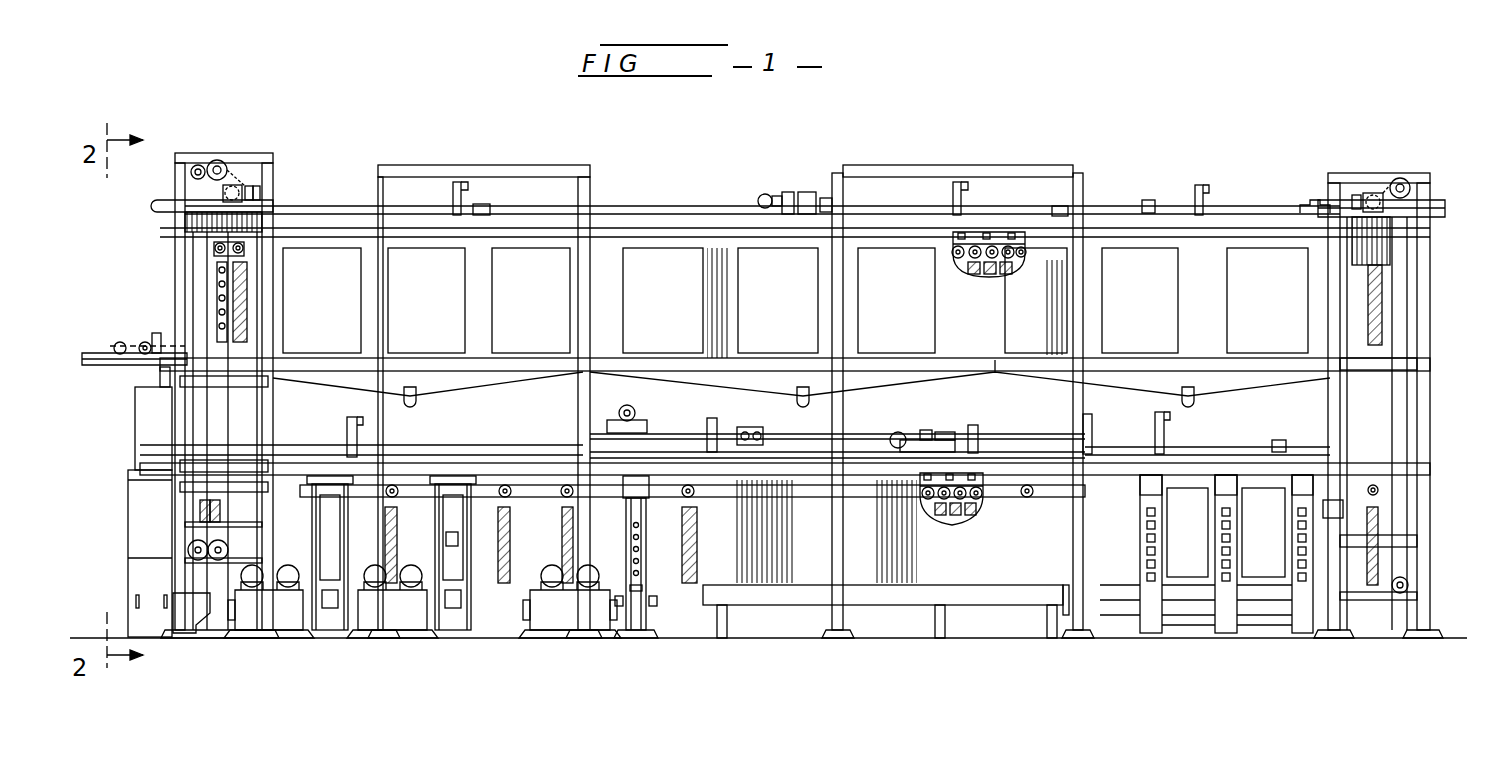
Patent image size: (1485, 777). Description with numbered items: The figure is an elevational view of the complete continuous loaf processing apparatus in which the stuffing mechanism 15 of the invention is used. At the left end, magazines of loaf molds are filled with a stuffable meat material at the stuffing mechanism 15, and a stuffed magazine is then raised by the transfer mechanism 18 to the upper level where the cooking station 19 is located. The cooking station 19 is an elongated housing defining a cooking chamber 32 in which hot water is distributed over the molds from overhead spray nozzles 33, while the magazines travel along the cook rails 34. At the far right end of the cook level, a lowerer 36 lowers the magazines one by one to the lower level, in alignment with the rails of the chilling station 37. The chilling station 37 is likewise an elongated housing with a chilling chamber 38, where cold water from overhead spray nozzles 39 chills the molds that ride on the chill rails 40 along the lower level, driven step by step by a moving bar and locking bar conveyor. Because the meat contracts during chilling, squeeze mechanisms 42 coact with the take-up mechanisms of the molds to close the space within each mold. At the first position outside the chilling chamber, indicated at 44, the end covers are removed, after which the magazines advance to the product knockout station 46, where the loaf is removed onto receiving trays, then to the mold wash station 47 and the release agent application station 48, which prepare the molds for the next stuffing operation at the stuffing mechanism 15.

The stuffing mechanism 15 is at (150, 524).
The transfer mechanism 18 is at (235, 152).
The cooking station 19 is at (608, 258).
The cooking chamber 32 is at (962, 262).
The overhead spray nozzles 33 is at (980, 232).
The cook rails 34 is at (1010, 266).
The lowerer 36 is at (1361, 175).
The chilling station 37 is at (984, 564).
The chilling chamber 38 is at (978, 475).
The overhead spray nozzles 39 is at (922, 473).
The chill rails 40 is at (981, 506).
The squeeze mechanisms 42 is at (930, 433).
The end cover removal position 44 is at (689, 588).
The product knockout station 46 is at (631, 638).
The mold wash station 47 is at (451, 602).
The release agent application station 48 is at (328, 600).